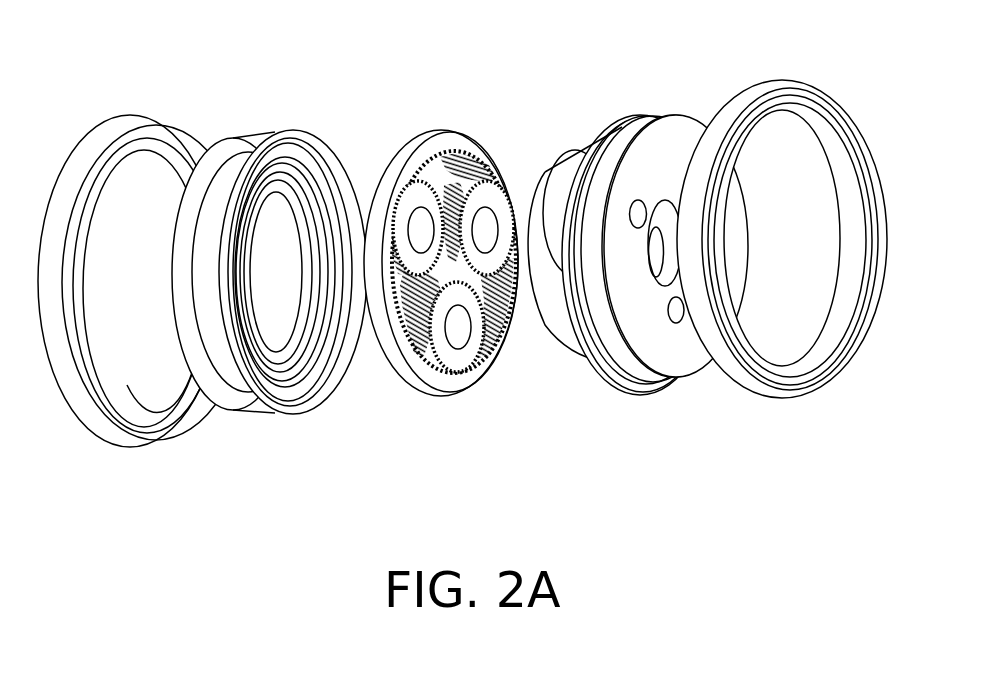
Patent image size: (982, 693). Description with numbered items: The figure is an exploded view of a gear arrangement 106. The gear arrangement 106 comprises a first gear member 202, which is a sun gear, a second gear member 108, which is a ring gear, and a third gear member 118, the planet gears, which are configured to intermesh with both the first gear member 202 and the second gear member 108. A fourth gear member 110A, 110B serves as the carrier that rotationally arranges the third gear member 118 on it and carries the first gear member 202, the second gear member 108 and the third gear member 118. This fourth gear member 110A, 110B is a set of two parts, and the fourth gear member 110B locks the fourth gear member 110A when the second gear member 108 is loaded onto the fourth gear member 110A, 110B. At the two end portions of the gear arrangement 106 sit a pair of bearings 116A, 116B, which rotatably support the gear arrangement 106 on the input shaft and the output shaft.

The gear arrangement 106 is at (688, 112).
The second gear member 108 is at (467, 316).
The fourth gear member 110A is at (638, 294).
The fourth gear member 110B is at (269, 321).
The bearing 116A is at (782, 291).
The bearing 116B is at (144, 320).
The third gear member 118 is at (474, 324).
The first gear member 202 is at (482, 270).